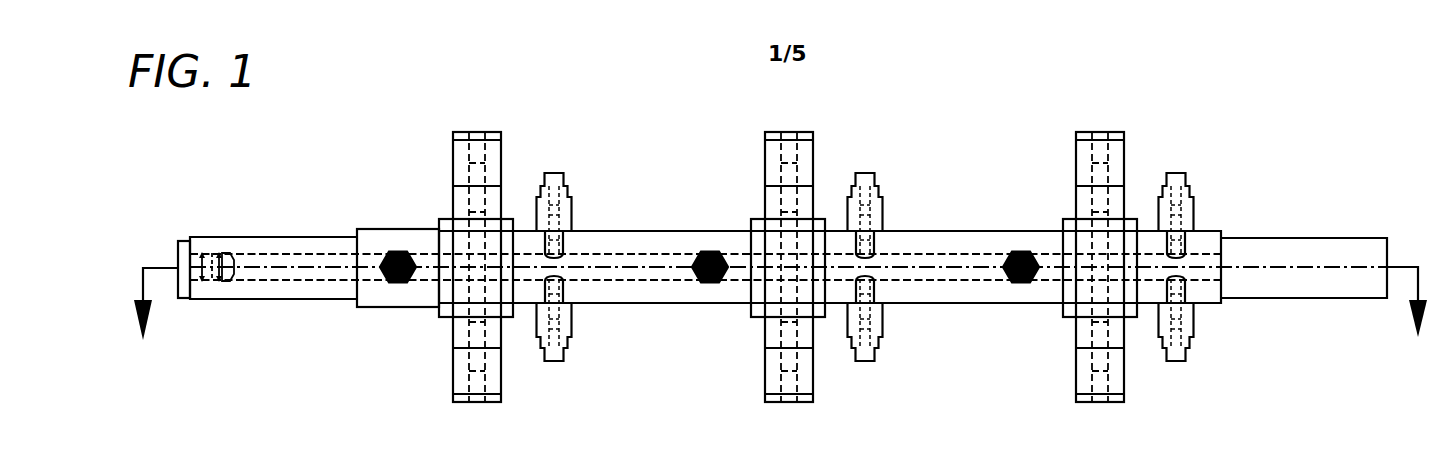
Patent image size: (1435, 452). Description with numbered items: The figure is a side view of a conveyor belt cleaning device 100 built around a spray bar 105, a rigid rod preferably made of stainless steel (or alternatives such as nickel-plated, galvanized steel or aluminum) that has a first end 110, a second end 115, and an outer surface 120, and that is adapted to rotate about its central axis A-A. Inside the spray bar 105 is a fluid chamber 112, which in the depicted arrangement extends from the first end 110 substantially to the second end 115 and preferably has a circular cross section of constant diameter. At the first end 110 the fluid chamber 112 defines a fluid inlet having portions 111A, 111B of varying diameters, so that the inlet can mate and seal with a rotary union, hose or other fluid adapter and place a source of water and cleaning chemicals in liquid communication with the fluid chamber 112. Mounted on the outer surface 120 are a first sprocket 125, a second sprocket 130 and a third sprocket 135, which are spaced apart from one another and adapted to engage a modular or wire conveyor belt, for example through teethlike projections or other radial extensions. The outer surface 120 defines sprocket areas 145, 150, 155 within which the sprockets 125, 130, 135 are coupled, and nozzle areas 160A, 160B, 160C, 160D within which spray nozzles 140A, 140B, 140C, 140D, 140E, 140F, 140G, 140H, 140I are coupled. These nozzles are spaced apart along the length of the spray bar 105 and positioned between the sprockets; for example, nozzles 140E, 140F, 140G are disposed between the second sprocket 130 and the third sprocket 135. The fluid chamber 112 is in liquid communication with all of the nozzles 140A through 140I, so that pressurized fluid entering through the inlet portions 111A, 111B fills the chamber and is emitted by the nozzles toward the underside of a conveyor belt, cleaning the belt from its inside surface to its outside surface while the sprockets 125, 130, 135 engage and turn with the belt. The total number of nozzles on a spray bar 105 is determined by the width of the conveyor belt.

The conveyor belt cleaning device 100 is at (676, 110).
The spray bar 105 is at (908, 230).
The first end 110 is at (215, 236).
The fluid inlet portion 111A is at (194, 279).
The fluid inlet portion 111B is at (232, 253).
The fluid chamber 112 is at (170, 252).
The second end 115 is at (1315, 238).
The outer surface 120 is at (728, 320).
The first sprocket 125 is at (478, 403).
The second sprocket 130 is at (790, 403).
The third sprocket 135 is at (1100, 403).
The spray nozzle 140A is at (398, 250).
The spray nozzle 140B is at (551, 172).
The spray nozzle 140C is at (548, 362).
The spray nozzle 140D is at (710, 250).
The spray nozzle 140E is at (861, 172).
The spray nozzle 140F is at (868, 362).
The spray nozzle 140G is at (1020, 284).
The spray nozzle 140H is at (1169, 173).
The spray nozzle 140I is at (1176, 362).
The sprocket area 145 is at (425, 209).
The sprocket area 150 is at (737, 206).
The sprocket area 155 is at (1046, 201).
The nozzle area 160A is at (403, 320).
The nozzle area 160B is at (608, 320).
The nozzle area 160C is at (929, 215).
The nozzle area 160D is at (1208, 212).